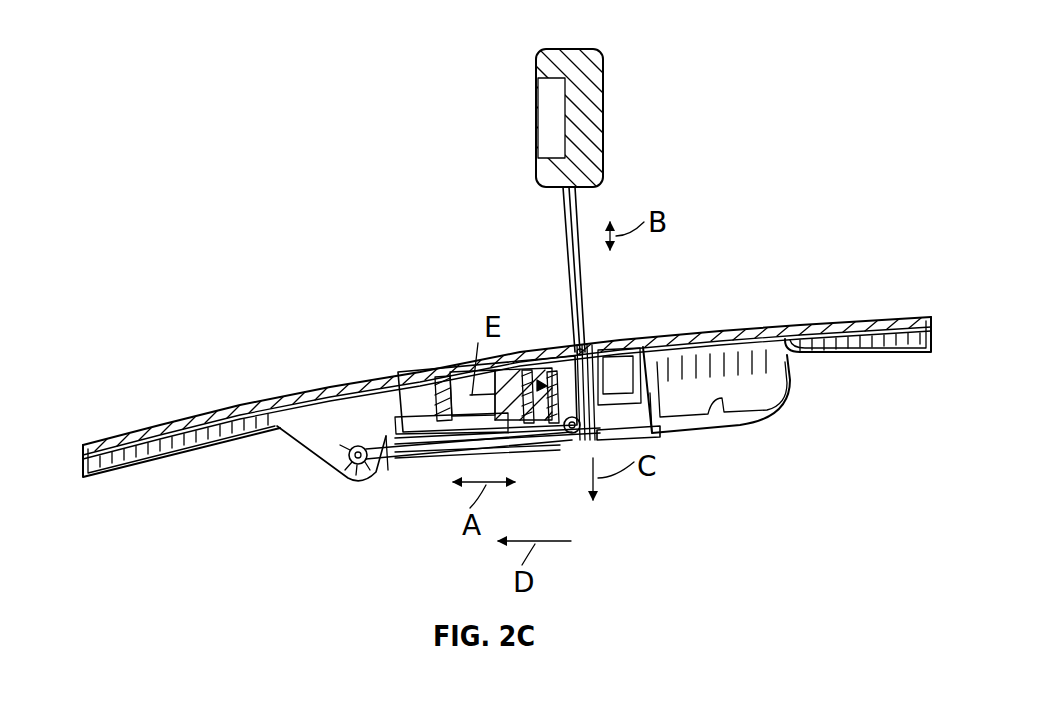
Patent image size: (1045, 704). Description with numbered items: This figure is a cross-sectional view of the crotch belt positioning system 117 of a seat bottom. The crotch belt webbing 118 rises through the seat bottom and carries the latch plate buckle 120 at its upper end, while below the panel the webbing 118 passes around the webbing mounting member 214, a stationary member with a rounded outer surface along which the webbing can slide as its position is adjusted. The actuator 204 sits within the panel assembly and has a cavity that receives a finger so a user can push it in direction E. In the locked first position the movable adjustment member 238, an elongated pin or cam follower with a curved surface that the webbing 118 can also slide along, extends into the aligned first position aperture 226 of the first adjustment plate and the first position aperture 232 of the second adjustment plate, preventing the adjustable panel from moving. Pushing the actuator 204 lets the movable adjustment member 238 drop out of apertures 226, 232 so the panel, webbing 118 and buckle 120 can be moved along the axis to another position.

The crotch belt positioning system 117 is at (788, 31).
The latch plate buckle 120 is at (590, 95).
The actuator 204 is at (458, 375).
The first position aperture 226 is at (550, 313).
The first position aperture 232 is at (543, 373).
The movable adjustment member 238 is at (569, 433).
The webbing mounting member 214 is at (360, 466).
The crotch belt webbing 118 is at (420, 463).